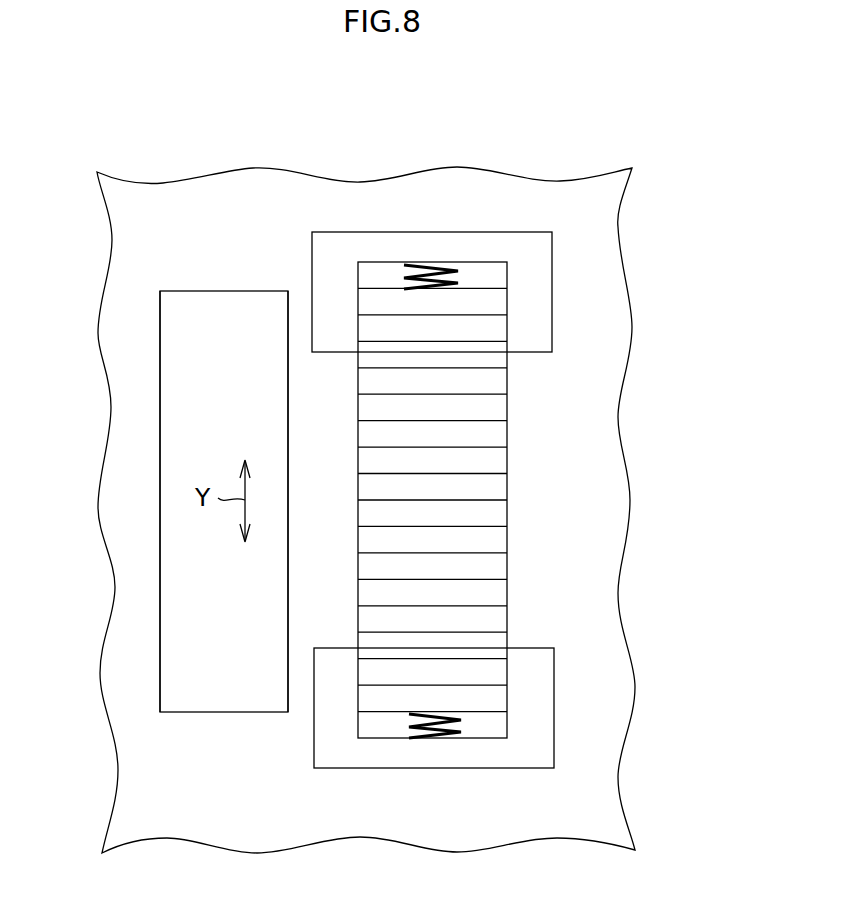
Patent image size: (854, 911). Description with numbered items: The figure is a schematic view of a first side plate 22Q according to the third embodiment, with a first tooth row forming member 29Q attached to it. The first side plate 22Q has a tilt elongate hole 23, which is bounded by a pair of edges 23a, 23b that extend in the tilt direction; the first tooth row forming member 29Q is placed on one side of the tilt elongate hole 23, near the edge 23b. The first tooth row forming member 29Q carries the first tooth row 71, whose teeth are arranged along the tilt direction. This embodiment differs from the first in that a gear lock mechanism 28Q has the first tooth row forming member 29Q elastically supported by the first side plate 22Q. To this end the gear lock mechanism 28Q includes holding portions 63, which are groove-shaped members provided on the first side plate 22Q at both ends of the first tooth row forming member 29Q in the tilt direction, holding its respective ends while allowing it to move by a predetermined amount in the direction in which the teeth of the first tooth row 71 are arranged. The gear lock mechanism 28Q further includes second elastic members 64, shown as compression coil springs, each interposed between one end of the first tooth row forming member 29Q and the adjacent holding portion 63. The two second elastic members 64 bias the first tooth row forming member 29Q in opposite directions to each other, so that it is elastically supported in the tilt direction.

The first side plate 22Q is at (245, 170).
The tilt elongate hole 23 is at (190, 587).
The edge 23a is at (165, 443).
The edge 23b is at (288, 623).
The gear lock mechanism 28Q is at (513, 500).
The first tooth row forming member 29Q is at (536, 501).
The holding portions 63 is at (525, 243).
The second elastic members 64 is at (443, 270).
The first tooth row 71 is at (468, 552).